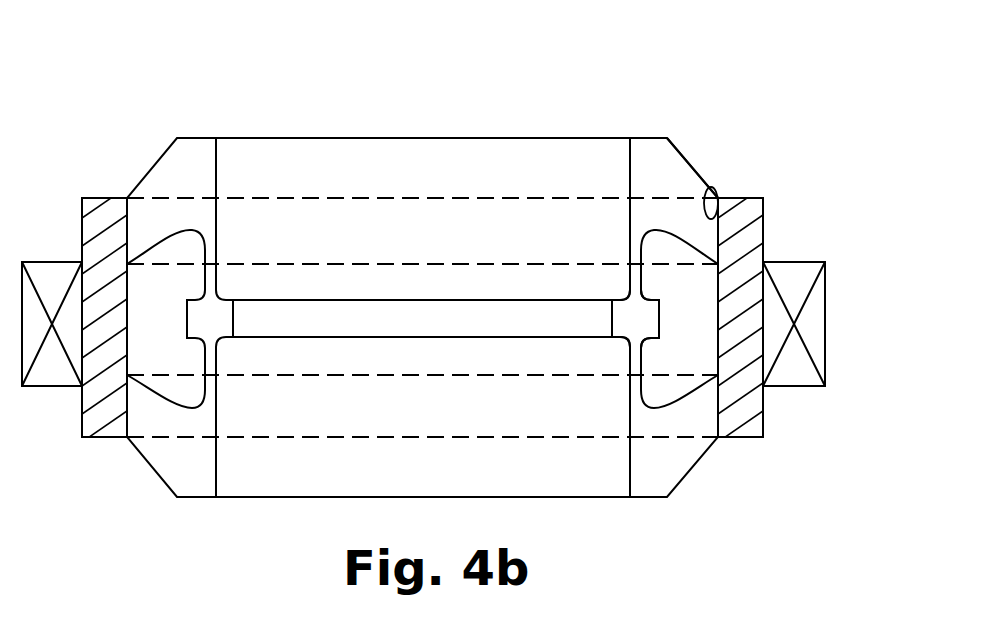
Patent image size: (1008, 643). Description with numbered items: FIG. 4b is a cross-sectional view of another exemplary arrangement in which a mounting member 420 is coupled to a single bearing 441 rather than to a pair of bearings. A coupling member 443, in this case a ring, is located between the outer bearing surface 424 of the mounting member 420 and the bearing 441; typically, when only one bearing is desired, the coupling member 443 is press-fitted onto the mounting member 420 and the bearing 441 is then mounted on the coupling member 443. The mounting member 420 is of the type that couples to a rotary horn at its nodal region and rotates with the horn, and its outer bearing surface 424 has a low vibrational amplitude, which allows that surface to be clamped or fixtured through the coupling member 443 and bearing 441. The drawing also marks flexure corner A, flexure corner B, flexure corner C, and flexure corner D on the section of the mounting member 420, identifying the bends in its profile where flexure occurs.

The mounting member 420 is at (655, 136).
The outer bearing surface 424 is at (716, 188).
The bearing 441 is at (825, 325).
The coupling member 443 is at (737, 425).
The flexure corner A is at (612, 298).
The flexure corner B is at (612, 339).
The flexure corner C is at (658, 298).
The flexure corner D is at (658, 339).